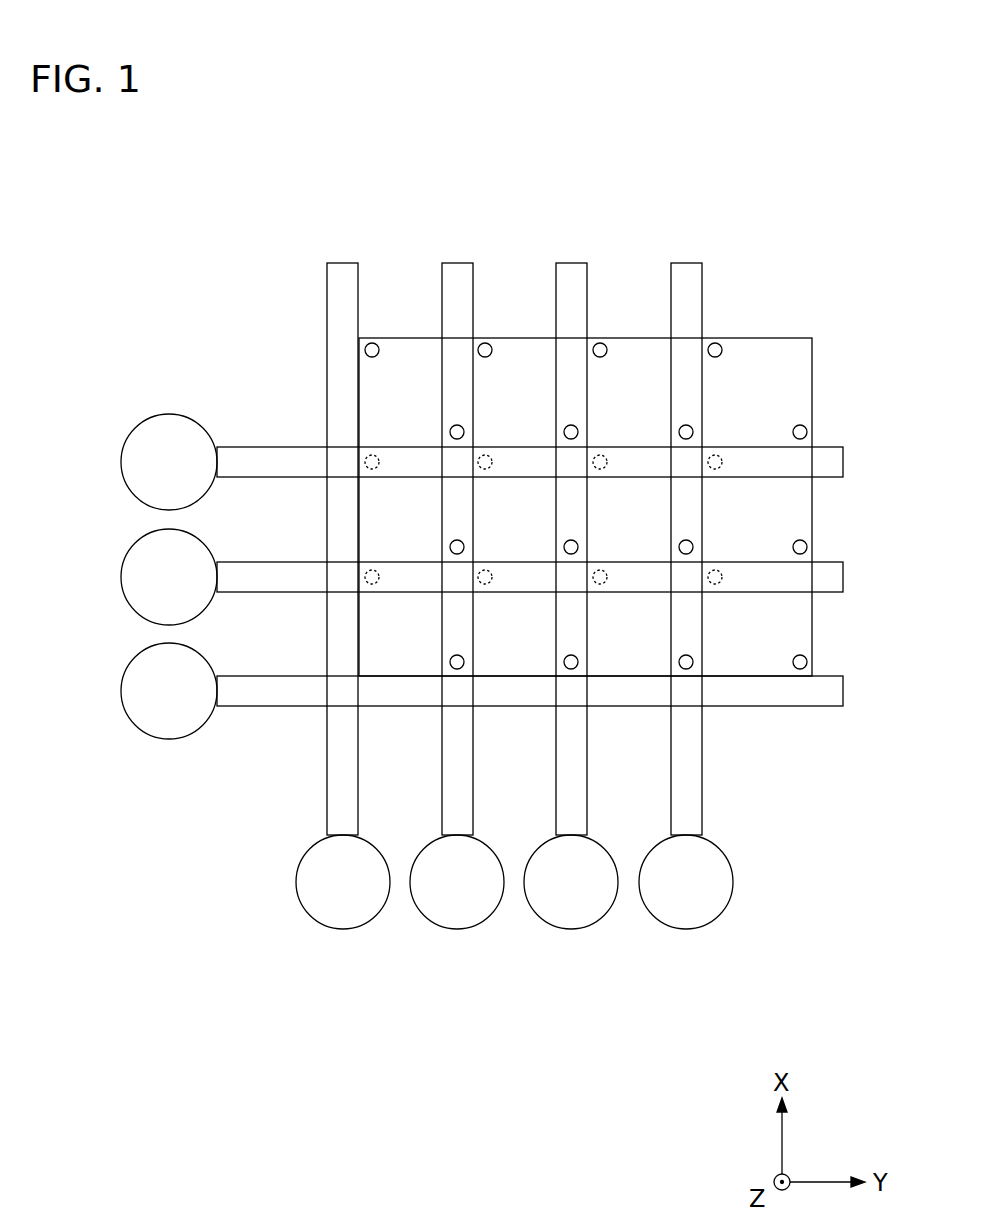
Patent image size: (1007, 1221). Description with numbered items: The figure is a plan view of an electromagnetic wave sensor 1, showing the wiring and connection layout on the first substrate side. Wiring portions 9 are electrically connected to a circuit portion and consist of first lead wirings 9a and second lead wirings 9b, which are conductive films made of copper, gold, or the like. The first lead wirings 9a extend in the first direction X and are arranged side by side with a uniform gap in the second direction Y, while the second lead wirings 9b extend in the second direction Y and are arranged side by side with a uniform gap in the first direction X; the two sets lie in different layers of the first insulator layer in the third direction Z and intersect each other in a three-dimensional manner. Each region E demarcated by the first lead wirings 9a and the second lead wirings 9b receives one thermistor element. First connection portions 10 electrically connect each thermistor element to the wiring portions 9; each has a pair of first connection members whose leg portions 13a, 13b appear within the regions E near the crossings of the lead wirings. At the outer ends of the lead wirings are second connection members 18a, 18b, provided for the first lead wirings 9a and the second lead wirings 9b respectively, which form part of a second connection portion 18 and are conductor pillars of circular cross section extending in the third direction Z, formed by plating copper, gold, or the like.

The electromagnetic wave sensor 1 is at (213, 174).
The wiring portions 9 is at (584, 506).
The first lead wirings 9a is at (343, 275).
The second lead wirings 9b is at (833, 463).
The first connection portions 10 is at (513, 475).
The leg portion 13a is at (448, 428).
The leg portion 13b is at (357, 338).
The pad 18 is at (385, 726).
The second connection member 18a is at (343, 930).
The second connection member 18b is at (121, 461).
The region E is at (407, 370).